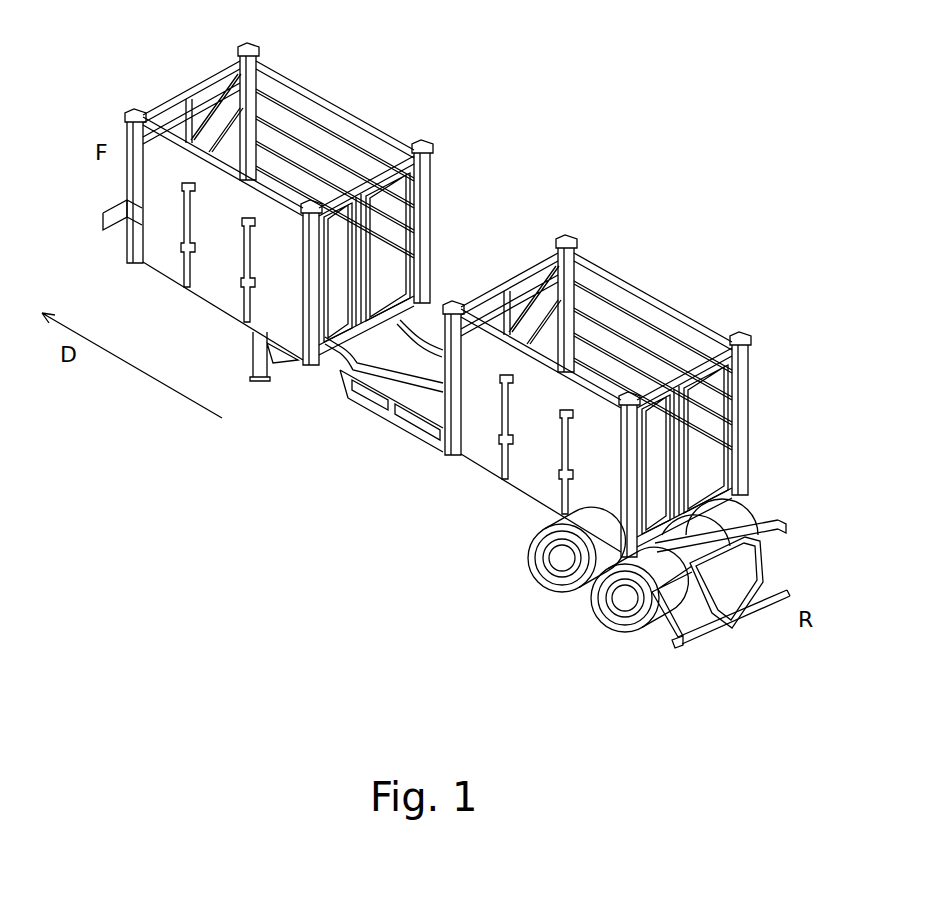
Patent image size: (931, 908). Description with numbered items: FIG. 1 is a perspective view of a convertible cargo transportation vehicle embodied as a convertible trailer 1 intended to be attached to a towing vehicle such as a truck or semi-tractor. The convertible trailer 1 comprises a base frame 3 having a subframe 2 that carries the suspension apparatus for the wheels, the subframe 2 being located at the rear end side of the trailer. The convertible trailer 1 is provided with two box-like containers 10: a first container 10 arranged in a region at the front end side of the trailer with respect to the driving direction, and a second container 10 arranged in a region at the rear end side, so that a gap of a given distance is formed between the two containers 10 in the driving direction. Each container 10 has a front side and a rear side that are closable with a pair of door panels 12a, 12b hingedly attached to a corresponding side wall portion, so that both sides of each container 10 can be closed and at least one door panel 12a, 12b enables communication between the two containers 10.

The convertible trailer 1 is at (398, 462).
The subframe 2 is at (587, 600).
The base frame 3 is at (342, 368).
The container 10 is at (333, 100).
The door panel 12a is at (208, 72).
The door panel 12b is at (693, 408).